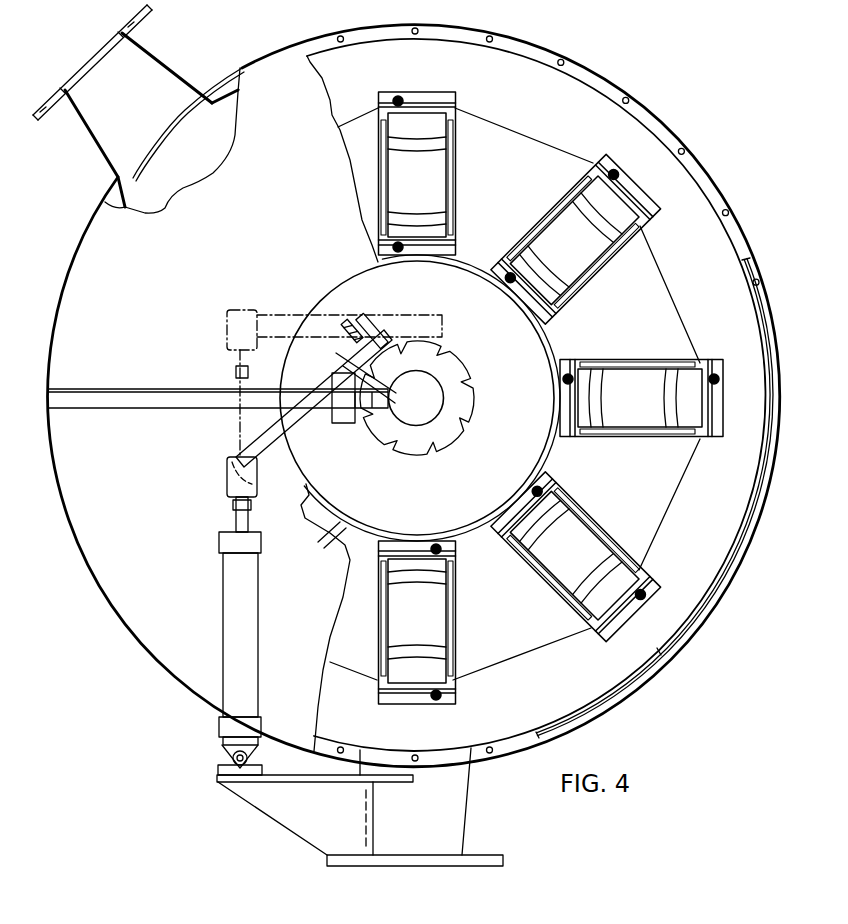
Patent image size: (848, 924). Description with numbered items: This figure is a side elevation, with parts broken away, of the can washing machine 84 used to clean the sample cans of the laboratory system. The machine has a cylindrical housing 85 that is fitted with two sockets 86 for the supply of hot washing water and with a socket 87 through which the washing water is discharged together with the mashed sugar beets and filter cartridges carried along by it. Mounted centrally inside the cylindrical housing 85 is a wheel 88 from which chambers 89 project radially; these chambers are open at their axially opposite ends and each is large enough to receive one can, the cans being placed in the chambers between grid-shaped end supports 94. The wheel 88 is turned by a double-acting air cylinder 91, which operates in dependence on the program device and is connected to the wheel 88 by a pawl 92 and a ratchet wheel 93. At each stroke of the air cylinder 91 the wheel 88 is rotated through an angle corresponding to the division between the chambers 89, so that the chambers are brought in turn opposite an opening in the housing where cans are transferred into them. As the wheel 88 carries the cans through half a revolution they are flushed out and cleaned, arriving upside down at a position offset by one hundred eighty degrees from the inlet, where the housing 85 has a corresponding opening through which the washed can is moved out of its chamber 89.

The can washing machine 84 is at (599, 75).
The cylindrical housing 85 is at (655, 142).
The sockets 86 is at (770, 404).
The socket 87 is at (458, 812).
The wheel 88 is at (552, 348).
The chambers 89 is at (586, 168).
The double-acting air cylinder 91 is at (252, 648).
The pawl 92 is at (364, 336).
The ratchet wheel 93 is at (443, 360).
The grid-shaped end supports 94 is at (392, 94).